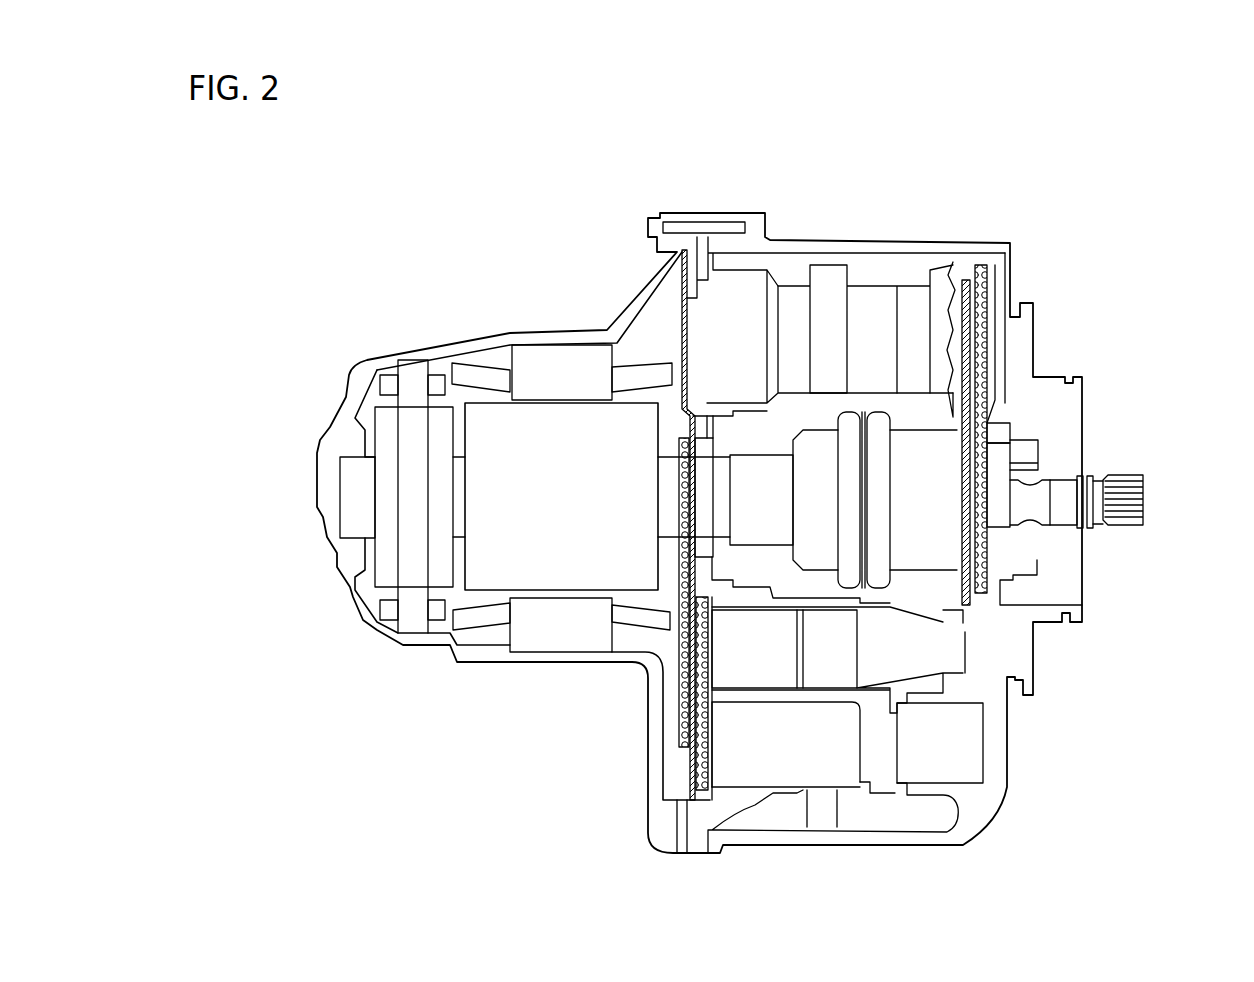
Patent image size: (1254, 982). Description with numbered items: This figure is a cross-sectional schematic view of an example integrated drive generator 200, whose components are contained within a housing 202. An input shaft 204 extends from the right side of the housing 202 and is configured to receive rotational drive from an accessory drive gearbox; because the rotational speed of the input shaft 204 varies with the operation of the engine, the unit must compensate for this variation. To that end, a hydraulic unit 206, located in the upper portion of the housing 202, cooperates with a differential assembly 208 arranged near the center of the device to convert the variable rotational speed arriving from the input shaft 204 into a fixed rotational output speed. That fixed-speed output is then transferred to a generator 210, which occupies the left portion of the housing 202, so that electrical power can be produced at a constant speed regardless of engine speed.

The integrated drive generator 200 is at (1040, 178).
The housing 202 is at (633, 291).
The input shaft 204 is at (1138, 476).
The hydraulic unit 206 is at (873, 283).
The differential assembly 208 is at (743, 497).
The generator 210 is at (557, 637).